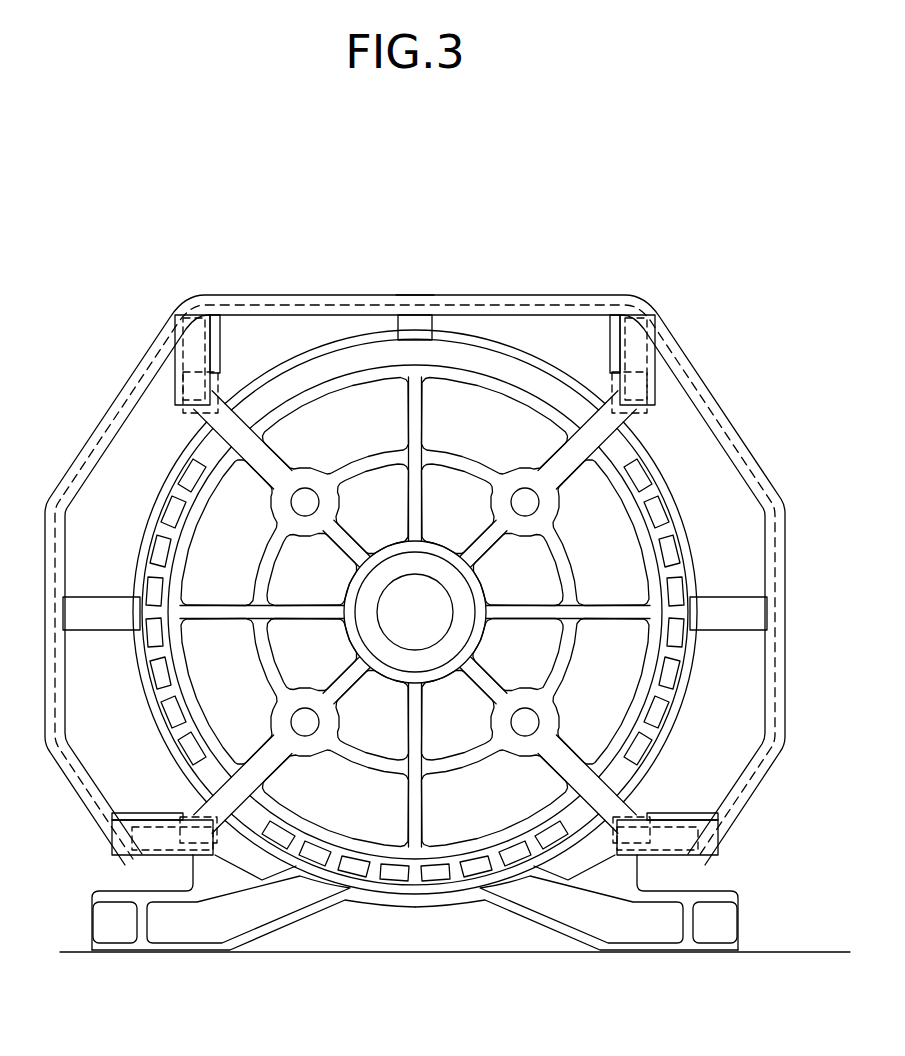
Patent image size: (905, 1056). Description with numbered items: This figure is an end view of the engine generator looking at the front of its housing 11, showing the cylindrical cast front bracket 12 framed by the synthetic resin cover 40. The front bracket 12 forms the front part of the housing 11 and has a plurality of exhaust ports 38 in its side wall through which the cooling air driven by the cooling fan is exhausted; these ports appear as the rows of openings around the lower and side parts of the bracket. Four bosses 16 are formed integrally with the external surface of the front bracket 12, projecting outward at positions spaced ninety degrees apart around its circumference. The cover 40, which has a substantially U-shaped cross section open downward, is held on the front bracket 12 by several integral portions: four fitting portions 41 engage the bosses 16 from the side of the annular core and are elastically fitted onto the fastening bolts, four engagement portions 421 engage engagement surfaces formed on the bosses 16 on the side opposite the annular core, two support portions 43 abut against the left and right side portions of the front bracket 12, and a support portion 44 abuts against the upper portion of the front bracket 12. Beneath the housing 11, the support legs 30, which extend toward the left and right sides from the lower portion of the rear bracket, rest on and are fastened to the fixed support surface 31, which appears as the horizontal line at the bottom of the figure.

The housing 11 is at (314, 333).
The front bracket 12 is at (526, 344).
The bosses 16 is at (220, 384).
The support legs 30 is at (190, 951).
The fixed support surface 31 is at (478, 953).
The exhaust ports 38 is at (477, 876).
The cover 40 is at (381, 295).
The fitting portions 41 is at (219, 331).
The engagement portions 421 is at (745, 881).
The support portions 43 is at (103, 612).
The support portion 44 is at (426, 318).